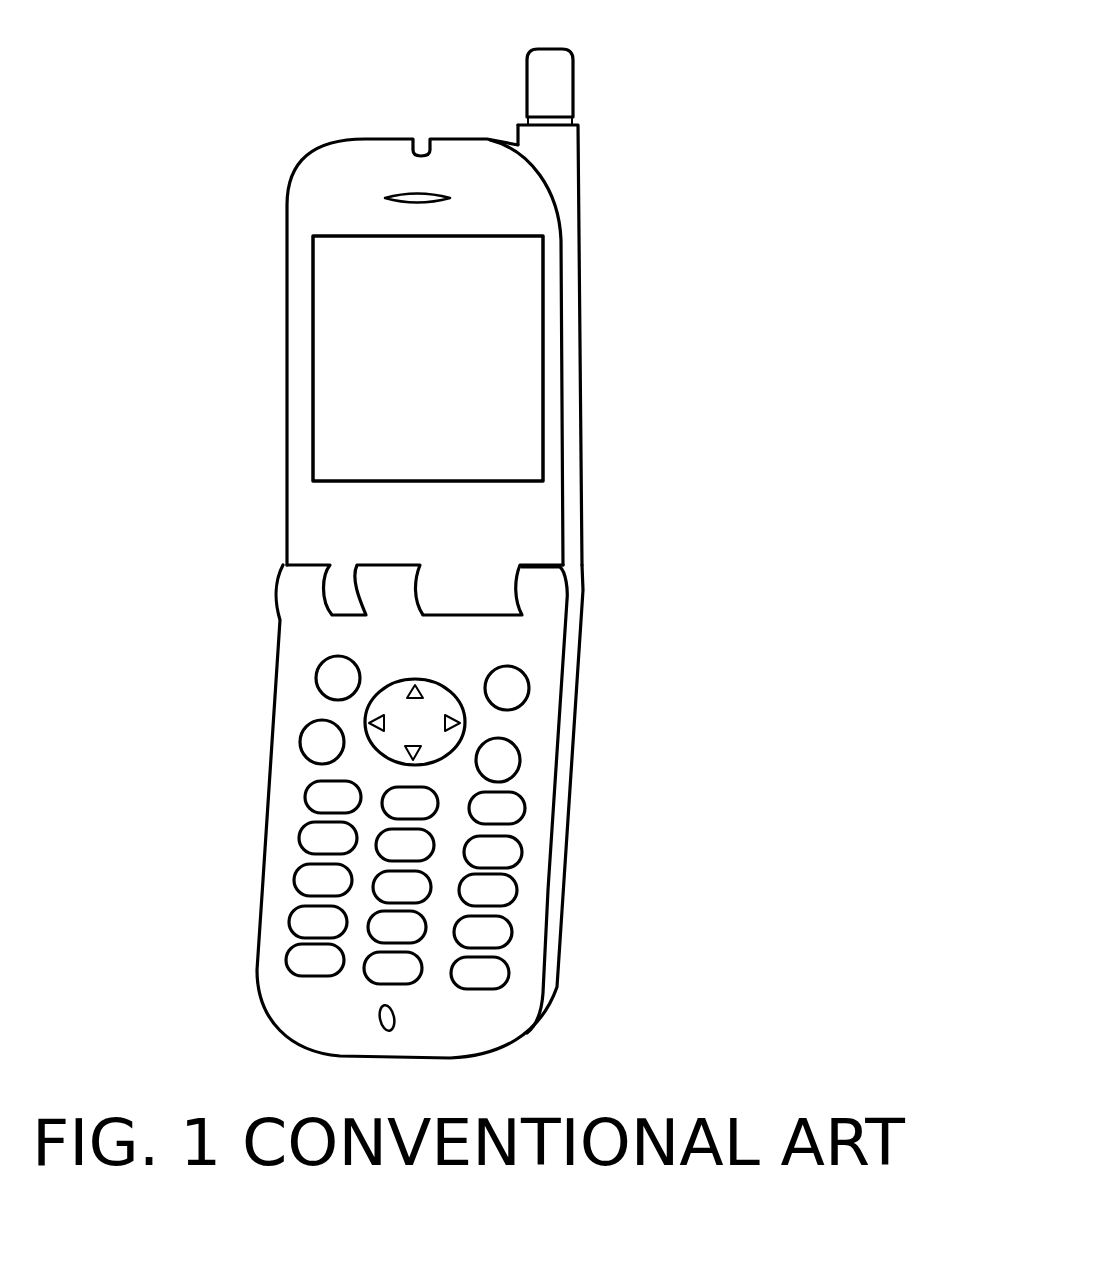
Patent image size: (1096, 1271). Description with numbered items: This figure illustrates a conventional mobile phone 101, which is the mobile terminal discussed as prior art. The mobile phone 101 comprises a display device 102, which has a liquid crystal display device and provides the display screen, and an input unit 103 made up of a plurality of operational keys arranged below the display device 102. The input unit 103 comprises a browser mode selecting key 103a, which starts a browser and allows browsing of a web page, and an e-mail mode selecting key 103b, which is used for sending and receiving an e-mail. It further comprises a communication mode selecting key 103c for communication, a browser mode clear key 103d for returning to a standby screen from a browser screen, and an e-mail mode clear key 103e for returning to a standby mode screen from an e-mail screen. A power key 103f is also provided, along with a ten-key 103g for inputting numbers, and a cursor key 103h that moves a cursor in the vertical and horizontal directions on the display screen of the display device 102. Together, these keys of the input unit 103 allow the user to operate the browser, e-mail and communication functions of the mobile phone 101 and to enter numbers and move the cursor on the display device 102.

The mobile phone 101 is at (770, 49).
The display device 102 is at (513, 308).
The input unit 103 is at (520, 877).
The browser mode selecting key 103a is at (328, 678).
The e-mail mode selecting key 103b is at (520, 675).
The communication mode selecting key 103c is at (320, 798).
The browser mode clear key 103d is at (320, 750).
The e-mail mode clear key 103e is at (503, 763).
The power key 103f is at (498, 810).
The ten-key 103g is at (293, 867).
The cursor key 103h is at (453, 733).